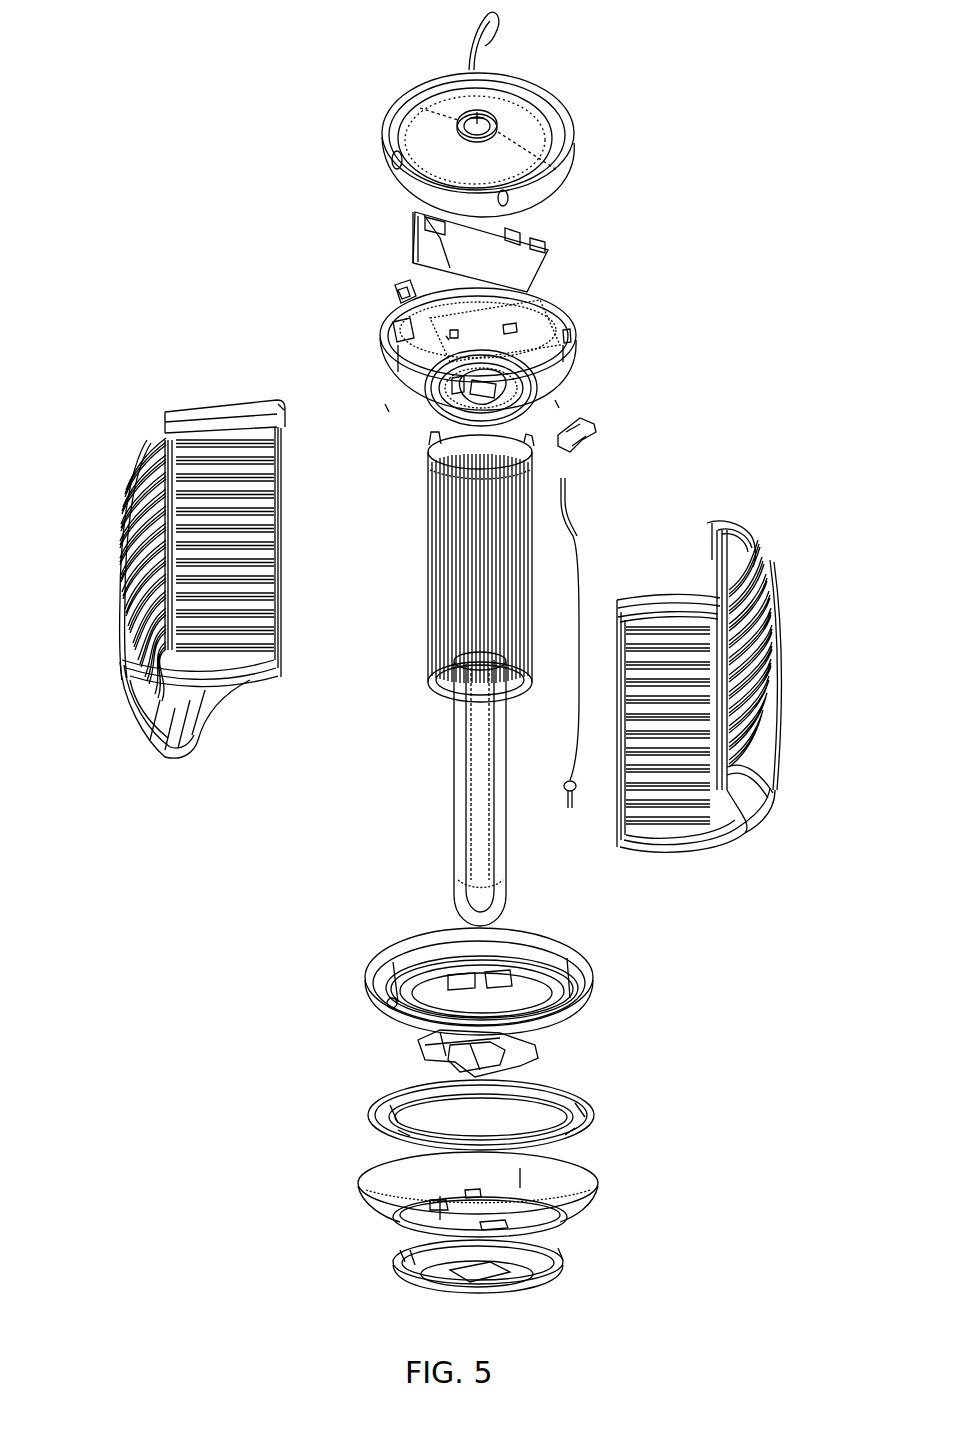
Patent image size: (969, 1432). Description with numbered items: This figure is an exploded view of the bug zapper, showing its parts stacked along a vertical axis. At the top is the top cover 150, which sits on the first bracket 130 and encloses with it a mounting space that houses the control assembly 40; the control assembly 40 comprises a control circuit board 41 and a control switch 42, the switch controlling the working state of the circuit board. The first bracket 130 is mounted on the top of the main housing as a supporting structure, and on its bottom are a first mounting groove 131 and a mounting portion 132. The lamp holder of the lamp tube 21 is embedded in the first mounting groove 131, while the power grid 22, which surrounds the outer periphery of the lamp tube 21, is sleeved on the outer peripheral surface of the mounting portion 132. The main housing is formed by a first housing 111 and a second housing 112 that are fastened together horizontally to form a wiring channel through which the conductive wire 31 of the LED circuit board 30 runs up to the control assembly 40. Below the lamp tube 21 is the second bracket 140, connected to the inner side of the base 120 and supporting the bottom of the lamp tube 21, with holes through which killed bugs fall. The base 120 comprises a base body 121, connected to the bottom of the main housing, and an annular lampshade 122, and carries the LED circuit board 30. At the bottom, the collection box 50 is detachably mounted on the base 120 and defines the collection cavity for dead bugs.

The top cover 150 is at (535, 92).
The control assembly 40 is at (298, 208).
The control circuit board 41 is at (456, 250).
The control switch 42 is at (396, 291).
The first bracket 130 is at (514, 303).
The mounting portion 132 is at (514, 360).
The first mounting groove 131 is at (474, 390).
The power grid 22 is at (442, 580).
The lamp tube 21 is at (500, 886).
The conductive wire 31 is at (575, 540).
The first housing 111 is at (124, 586).
The second housing 112 is at (770, 697).
The base body 121 is at (582, 1004).
The second bracket 140 is at (420, 1050).
The LED circuit board 30 is at (378, 1112).
The base 120 is at (749, 1144).
The annular lampshade 122 is at (578, 1203).
The collection box 50 is at (528, 1290).